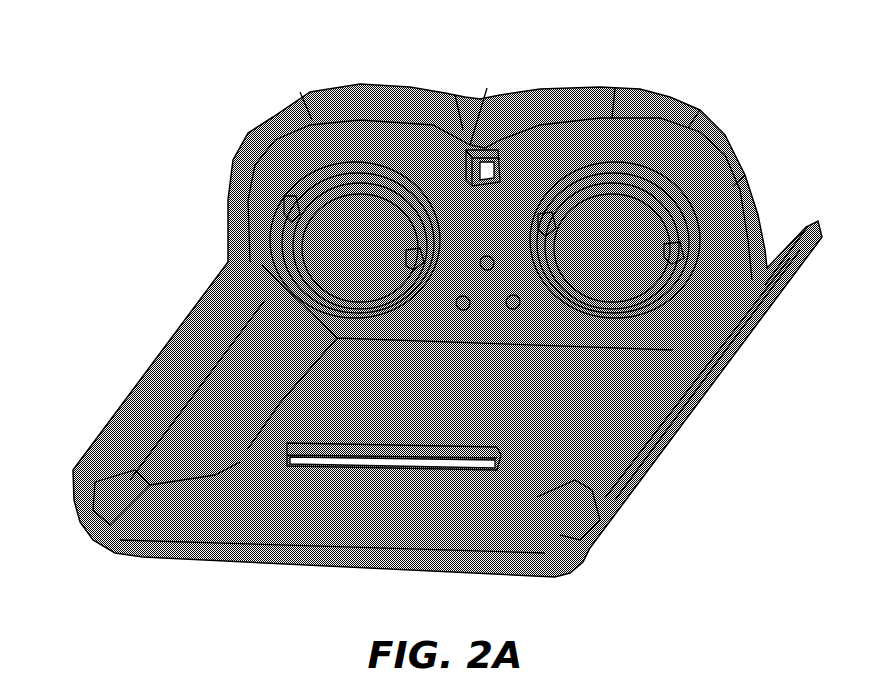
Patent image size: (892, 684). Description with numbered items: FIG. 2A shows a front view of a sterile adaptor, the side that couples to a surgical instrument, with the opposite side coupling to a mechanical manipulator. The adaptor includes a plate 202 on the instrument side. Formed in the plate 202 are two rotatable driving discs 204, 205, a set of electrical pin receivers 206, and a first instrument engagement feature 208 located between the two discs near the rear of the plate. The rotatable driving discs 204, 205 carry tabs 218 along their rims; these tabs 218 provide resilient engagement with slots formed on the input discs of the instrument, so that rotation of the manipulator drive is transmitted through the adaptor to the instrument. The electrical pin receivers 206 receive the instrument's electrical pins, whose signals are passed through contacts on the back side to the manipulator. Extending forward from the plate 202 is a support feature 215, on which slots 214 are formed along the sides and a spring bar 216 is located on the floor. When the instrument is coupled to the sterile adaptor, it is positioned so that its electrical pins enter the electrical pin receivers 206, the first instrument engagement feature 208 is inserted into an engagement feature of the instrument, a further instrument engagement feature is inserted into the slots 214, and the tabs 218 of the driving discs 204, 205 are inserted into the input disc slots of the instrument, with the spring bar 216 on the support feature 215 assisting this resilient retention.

The plate 202 is at (330, 128).
The rotatable driving discs 204 is at (363, 263).
The second well 205 is at (620, 267).
The electrical pin receivers 206 is at (497, 285).
The first instrument engagement feature 208 is at (472, 160).
The slots 214 is at (178, 502).
The support feature 215 is at (299, 517).
The spring bar 216 is at (320, 450).
The tabs 218 is at (413, 262).